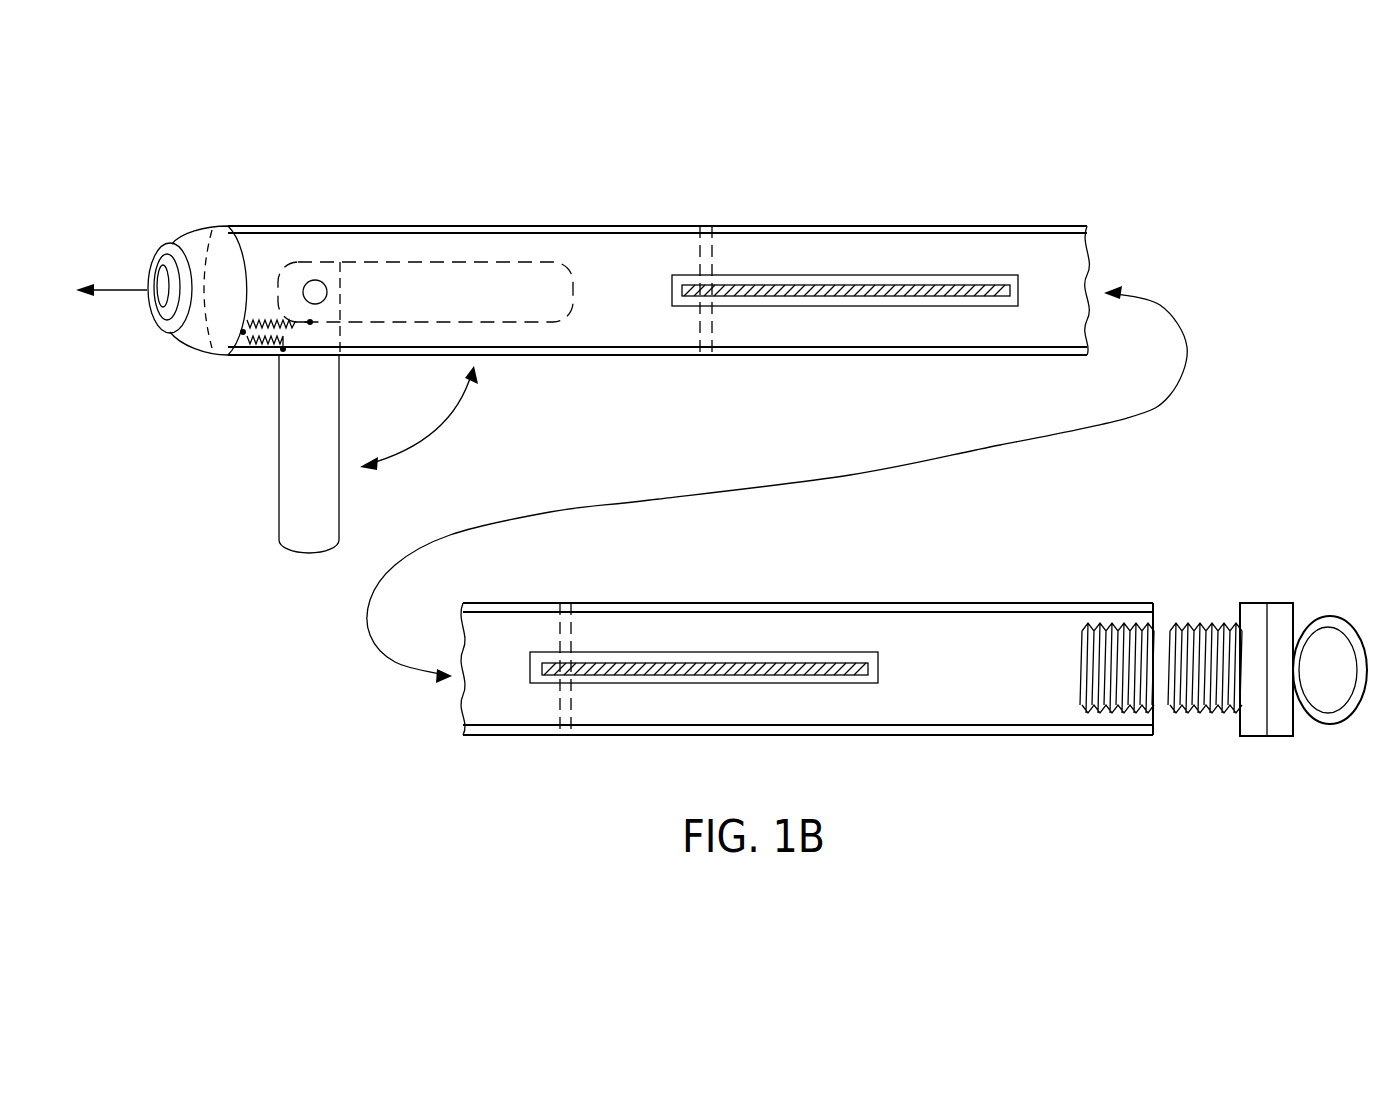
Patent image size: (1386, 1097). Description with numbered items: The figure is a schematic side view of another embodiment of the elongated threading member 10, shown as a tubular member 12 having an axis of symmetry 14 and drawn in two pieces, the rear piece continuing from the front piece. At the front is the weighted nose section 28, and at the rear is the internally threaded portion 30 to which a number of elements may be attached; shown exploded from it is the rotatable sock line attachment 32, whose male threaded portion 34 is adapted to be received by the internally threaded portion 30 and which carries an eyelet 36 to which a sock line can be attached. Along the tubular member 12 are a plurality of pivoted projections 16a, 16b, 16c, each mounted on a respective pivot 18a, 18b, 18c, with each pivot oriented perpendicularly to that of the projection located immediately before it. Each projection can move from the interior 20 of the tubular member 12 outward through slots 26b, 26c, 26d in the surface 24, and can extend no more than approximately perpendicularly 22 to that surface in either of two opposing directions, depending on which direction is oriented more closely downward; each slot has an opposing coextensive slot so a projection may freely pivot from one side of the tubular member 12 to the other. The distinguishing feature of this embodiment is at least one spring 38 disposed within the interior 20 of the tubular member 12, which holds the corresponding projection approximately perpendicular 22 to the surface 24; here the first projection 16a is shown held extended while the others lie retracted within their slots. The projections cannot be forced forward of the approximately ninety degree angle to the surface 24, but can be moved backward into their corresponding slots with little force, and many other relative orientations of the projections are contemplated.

The elongated threading member 10 is at (718, 212).
The tubular member 12 is at (845, 226).
The axis of symmetry 14 is at (122, 288).
The pivoted projection 16a is at (322, 520).
The pivoted projection 16b is at (897, 297).
The pivoted projection 16c is at (632, 675).
The pivot 18a is at (315, 280).
The pivot 18b is at (702, 356).
The pivot 18c is at (563, 602).
The interior 20 is at (619, 303).
The approximately perpendicular direction 22 is at (435, 430).
The surface 24 is at (432, 226).
The slot 26b is at (595, 347).
The slot 26c is at (1002, 277).
The slot 26d is at (768, 655).
The weighted nose section 28 is at (210, 260).
The rear internally threaded portion 30 is at (1120, 624).
The rotatable sock line attachment 32 is at (1268, 597).
The male threaded portion 34 is at (1195, 624).
The eyelet 36 is at (1327, 617).
The spring 38 is at (243, 332).